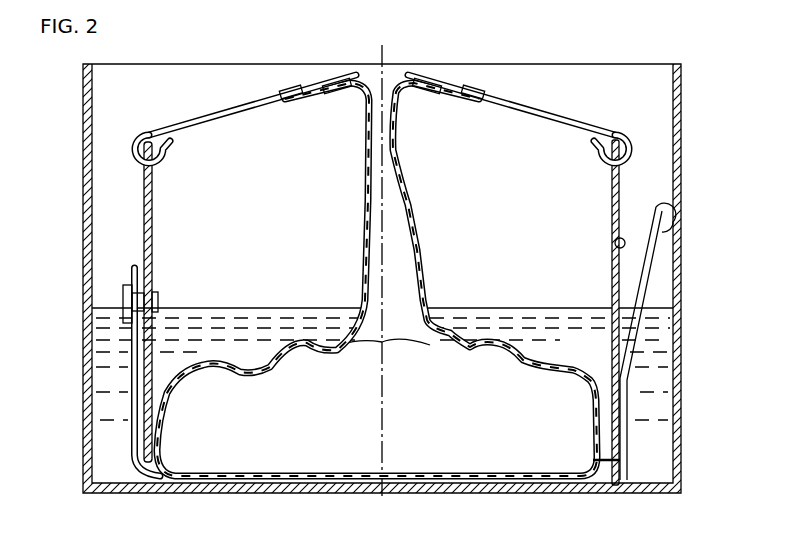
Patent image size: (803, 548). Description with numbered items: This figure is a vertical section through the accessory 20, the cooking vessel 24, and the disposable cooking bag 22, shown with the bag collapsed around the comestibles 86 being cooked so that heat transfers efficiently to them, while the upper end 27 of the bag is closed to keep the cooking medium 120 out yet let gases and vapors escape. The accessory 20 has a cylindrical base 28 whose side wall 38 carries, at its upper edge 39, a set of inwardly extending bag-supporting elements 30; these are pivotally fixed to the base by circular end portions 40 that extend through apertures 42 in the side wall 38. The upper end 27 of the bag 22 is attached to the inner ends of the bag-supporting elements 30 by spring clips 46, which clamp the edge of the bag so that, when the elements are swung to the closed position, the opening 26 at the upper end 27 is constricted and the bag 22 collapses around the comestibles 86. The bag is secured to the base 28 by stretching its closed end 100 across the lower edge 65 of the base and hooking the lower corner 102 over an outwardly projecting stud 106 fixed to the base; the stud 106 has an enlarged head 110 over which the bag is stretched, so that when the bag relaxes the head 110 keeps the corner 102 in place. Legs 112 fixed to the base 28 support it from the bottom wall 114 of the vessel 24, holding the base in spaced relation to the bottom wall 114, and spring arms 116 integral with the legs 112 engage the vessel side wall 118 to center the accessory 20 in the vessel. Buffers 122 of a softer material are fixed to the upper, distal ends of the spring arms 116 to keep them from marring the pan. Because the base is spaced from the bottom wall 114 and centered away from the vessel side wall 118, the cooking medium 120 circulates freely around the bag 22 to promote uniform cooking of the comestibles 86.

The accessory 20 is at (132, 207).
The disposable cooking bag 22 is at (355, 196).
The cooking vessel 24 is at (688, 115).
The opening 26 is at (388, 82).
The upper end 27 is at (430, 97).
The base 28 is at (630, 187).
The bag-supporting elements 30 is at (208, 100).
The side wall 38 is at (613, 243).
The upper edge 39 is at (614, 137).
The circular end portions 40 is at (130, 148).
The apertures 42 is at (620, 171).
The spring clips 46 is at (283, 72).
The lower edge 65 is at (602, 465).
The comestibles 86 is at (318, 362).
The closed end 100 is at (525, 480).
The lower corner 102 is at (131, 273).
The studs 106 is at (170, 289).
The enlarged heads 110 is at (125, 294).
The legs 112 is at (626, 466).
The bottom wall 114 is at (443, 490).
The spring arms 116 is at (652, 263).
The vessel side wall 118 is at (683, 333).
The cooking medium 120 is at (500, 318).
The buffers 122 is at (668, 232).